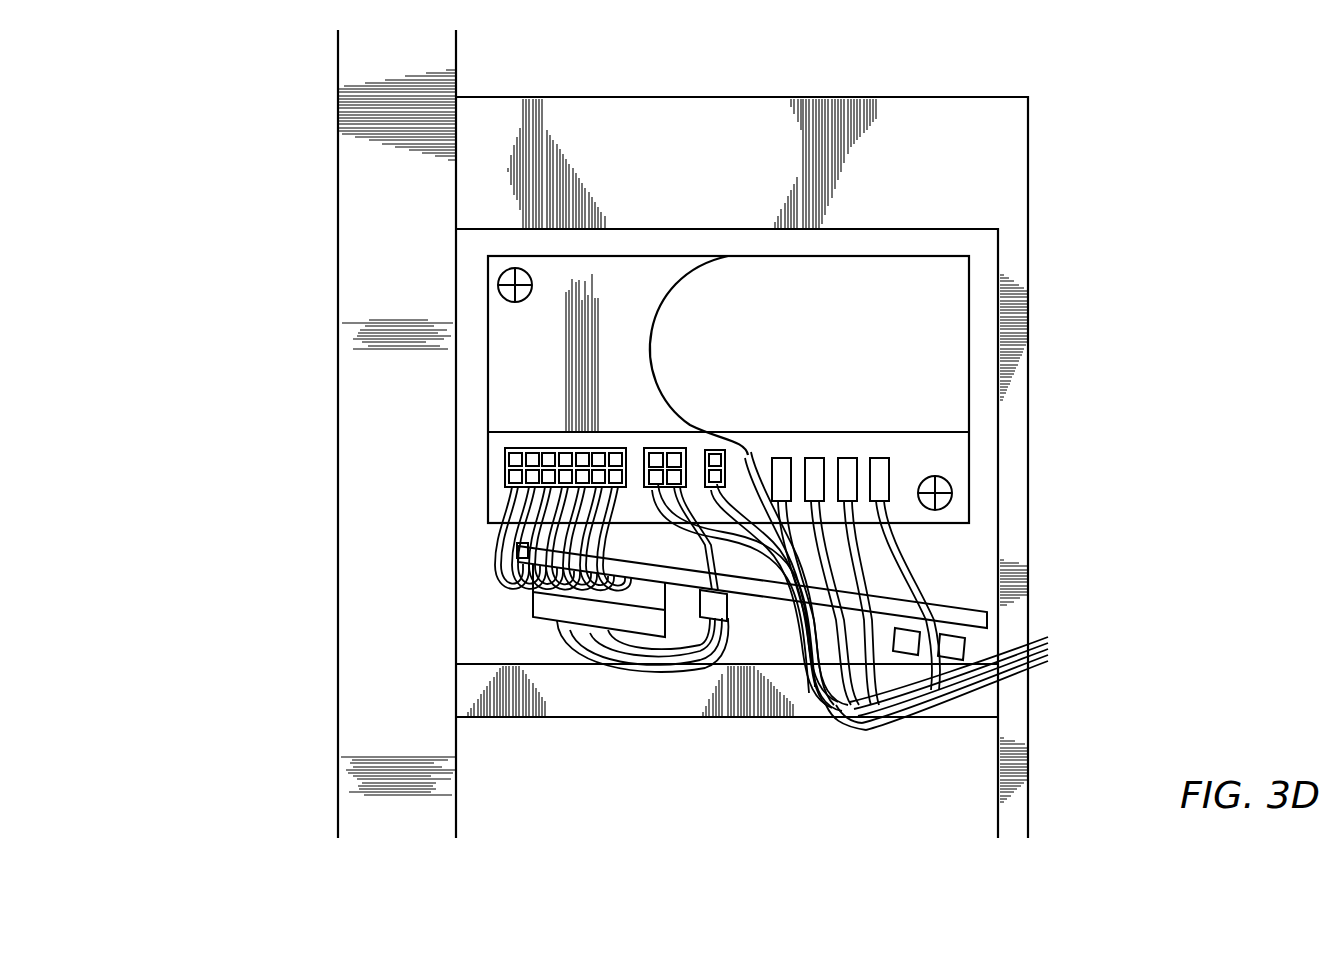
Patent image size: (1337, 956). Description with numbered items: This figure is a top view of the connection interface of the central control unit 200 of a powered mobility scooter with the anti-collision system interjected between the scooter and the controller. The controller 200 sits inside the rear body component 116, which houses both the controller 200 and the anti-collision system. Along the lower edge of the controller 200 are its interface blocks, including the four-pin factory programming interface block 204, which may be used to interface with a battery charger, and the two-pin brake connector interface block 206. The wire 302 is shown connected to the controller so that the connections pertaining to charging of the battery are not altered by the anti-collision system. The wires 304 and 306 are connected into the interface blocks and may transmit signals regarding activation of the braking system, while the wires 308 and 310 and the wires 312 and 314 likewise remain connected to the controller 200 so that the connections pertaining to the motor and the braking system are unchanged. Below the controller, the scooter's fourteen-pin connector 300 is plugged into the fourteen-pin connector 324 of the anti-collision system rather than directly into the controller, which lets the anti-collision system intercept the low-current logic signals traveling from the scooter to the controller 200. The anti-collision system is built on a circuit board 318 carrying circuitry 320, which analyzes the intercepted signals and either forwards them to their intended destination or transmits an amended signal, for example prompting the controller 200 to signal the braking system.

The rear body component 116 is at (360, 237).
The central control unit 200 is at (935, 256).
The interface block 204 is at (650, 448).
The interface block 206 is at (712, 450).
The 14-pin connector 300 is at (548, 632).
The wire 302 is at (556, 448).
The wire 304 is at (674, 430).
The wire 306 is at (752, 458).
The wire 308 is at (781, 458).
The wire 310 is at (814, 458).
The wire 312 is at (846, 458).
The wire 314 is at (880, 458).
The circuit board 318 is at (520, 549).
The circuitry 320 is at (906, 655).
The 14-pin connector 324 is at (645, 622).